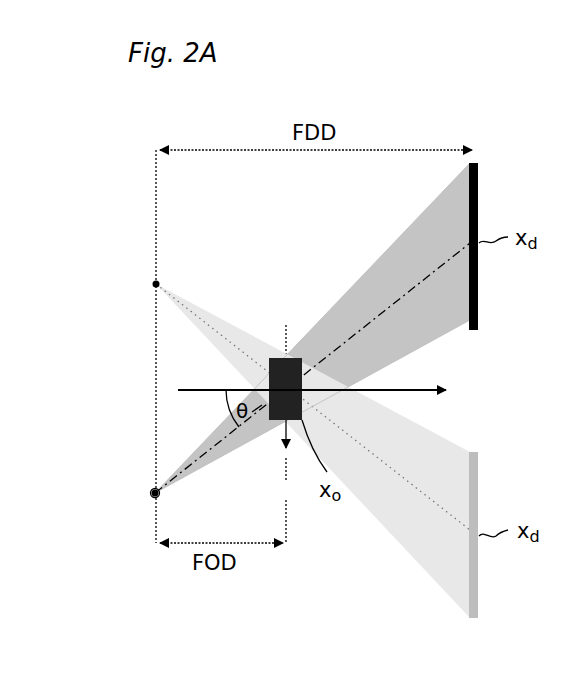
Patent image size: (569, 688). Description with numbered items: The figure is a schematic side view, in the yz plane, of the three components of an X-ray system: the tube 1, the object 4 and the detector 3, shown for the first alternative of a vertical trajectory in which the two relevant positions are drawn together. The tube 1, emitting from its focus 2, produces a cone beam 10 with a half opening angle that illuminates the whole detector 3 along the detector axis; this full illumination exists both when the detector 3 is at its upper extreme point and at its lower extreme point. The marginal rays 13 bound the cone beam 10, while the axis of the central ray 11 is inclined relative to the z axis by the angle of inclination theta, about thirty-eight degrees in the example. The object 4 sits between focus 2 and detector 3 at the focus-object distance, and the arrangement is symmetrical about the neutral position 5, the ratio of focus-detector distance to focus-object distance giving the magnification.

The X-ray tube 1 is at (136, 480).
The focus 2 is at (150, 285).
The X-ray detector 3 is at (479, 172).
The object 4 is at (268, 358).
The neutral position 5 is at (277, 326).
The cone beam 10 is at (375, 292).
The central ray 11 is at (427, 273).
The marginal ray 13 is at (333, 302).